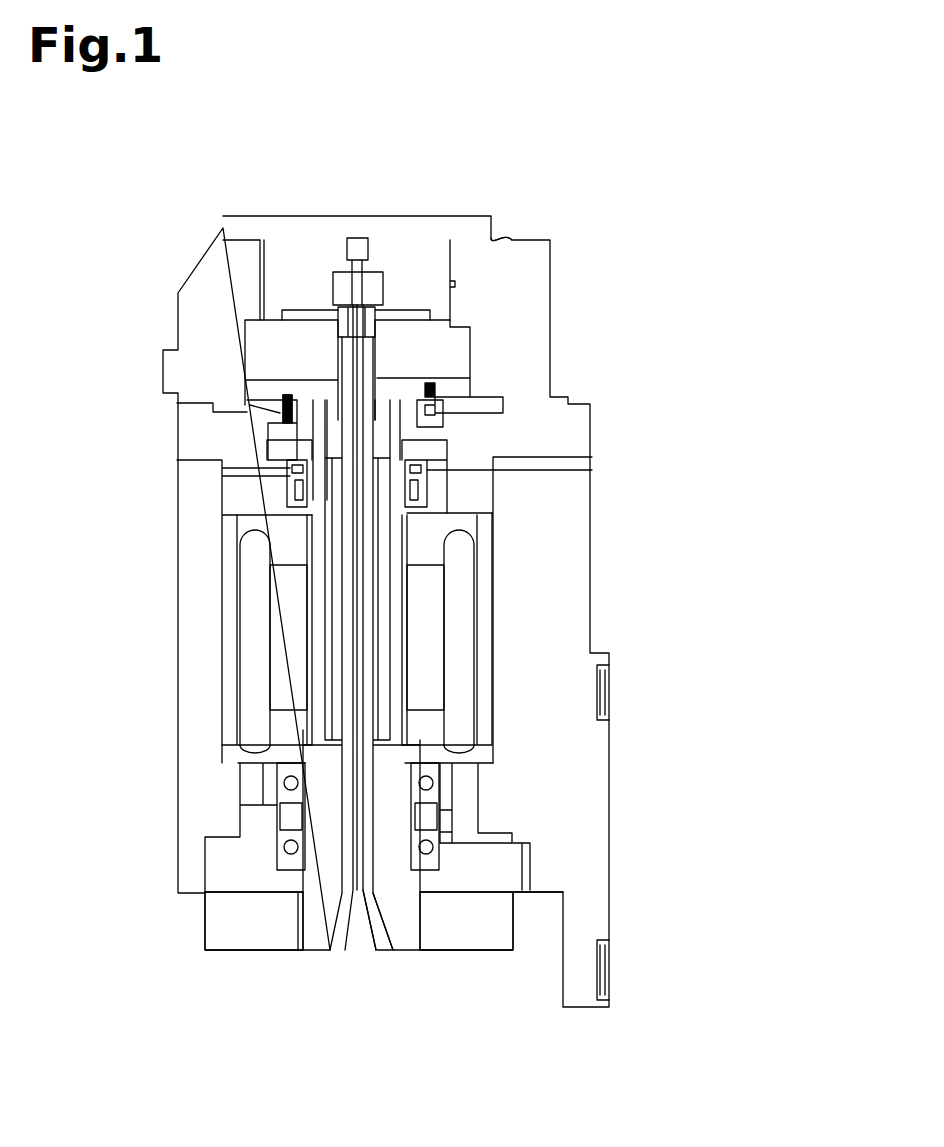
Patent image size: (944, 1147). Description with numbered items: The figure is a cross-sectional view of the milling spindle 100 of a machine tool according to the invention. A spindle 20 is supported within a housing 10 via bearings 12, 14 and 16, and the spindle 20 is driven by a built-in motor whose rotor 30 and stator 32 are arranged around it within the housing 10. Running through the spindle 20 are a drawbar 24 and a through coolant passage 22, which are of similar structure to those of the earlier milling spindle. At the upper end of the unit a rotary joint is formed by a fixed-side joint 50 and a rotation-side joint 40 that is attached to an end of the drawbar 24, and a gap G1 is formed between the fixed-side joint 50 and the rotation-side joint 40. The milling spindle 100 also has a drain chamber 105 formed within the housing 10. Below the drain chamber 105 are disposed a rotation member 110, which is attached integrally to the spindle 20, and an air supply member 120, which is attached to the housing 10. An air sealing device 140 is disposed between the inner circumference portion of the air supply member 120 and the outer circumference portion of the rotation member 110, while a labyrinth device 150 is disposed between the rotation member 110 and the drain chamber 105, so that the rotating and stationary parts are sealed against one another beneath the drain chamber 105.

The housing 10 is at (197, 613).
The bearing 12 is at (273, 855).
The bearing 14 is at (268, 778).
The bearing 16 is at (268, 497).
The spindle 20 is at (313, 935).
The through coolant passage 22 is at (360, 893).
The drawbar 24 is at (370, 893).
The rotor 30 is at (428, 665).
The stator 32 is at (467, 627).
The rotation-side joint 40 is at (390, 312).
The fixed-side joint 50 is at (370, 305).
The milling spindle 100 is at (743, 498).
The drain chamber 105 is at (416, 392).
The rotation member 110 is at (440, 343).
The air supply member 120 is at (270, 415).
The air sealing device 140 is at (440, 410).
The labyrinth device 150 is at (445, 388).
The gap G1 is at (345, 278).